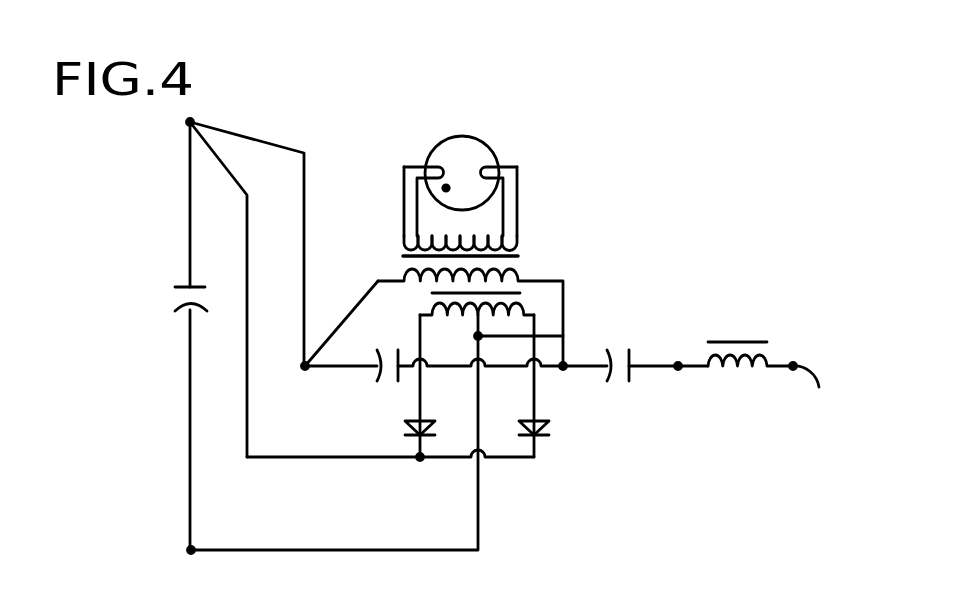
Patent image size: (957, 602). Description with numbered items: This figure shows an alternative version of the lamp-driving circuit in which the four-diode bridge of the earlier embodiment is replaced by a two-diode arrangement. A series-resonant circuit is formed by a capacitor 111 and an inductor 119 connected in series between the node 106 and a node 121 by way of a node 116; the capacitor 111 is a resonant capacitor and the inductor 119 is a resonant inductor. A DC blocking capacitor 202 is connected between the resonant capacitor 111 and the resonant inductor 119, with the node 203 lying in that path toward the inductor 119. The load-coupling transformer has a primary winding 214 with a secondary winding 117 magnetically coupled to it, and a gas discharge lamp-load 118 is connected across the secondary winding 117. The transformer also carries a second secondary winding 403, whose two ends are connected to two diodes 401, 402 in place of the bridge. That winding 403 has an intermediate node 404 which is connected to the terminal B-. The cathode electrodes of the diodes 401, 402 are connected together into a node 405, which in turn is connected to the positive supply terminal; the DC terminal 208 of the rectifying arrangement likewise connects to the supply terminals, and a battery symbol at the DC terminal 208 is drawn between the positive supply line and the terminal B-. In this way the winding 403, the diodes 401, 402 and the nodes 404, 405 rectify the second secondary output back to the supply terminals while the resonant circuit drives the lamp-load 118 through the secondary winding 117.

The node 106 is at (305, 367).
The capacitor 111 is at (395, 383).
The node 116 is at (565, 370).
The secondary winding 117 is at (490, 235).
The gas discharge lamp-load 118 is at (472, 138).
The inductor 119 is at (745, 343).
The node 121 is at (814, 393).
The DC blocking capacitor 202 is at (620, 348).
The circuit node 203 is at (680, 368).
The DC terminal 208 is at (175, 292).
The primary winding 214 is at (518, 256).
The diode 401 is at (407, 427).
The diode 402 is at (550, 428).
The second secondary winding 403 is at (450, 302).
The intermediate node 404 is at (545, 336).
The node 405 is at (418, 462).
The terminal B- is at (191, 550).